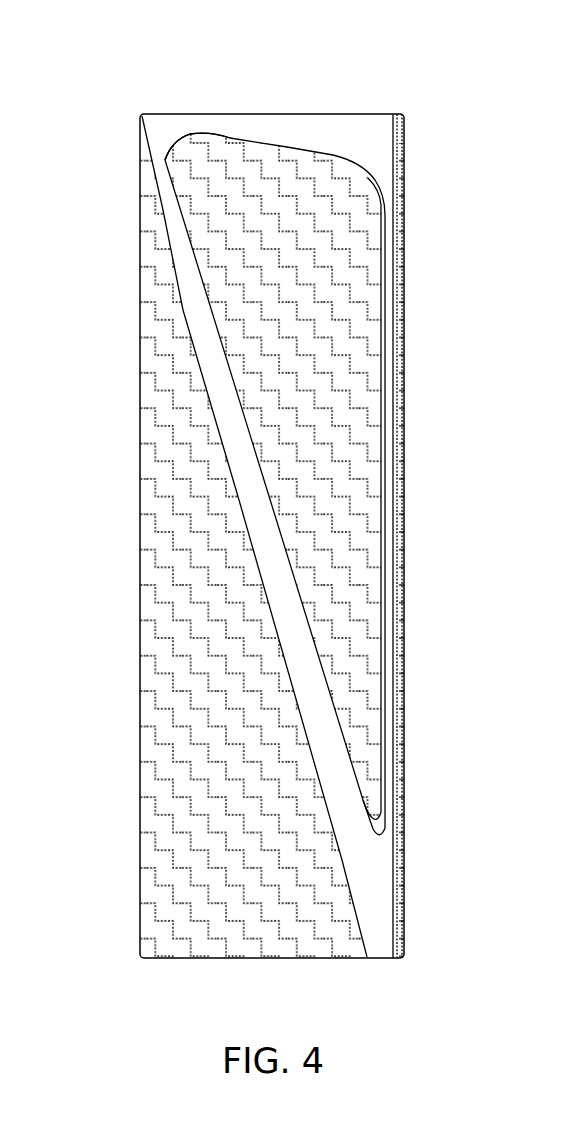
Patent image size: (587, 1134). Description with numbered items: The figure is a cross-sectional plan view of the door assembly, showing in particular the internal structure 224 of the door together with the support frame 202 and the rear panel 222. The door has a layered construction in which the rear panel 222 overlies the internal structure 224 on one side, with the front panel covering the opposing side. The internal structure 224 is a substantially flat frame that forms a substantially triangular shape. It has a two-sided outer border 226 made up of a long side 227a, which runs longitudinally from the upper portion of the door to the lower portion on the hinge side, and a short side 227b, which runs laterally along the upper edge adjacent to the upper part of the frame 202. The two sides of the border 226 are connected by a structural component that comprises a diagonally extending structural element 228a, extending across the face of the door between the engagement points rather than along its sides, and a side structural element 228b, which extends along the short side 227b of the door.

The support frame 202 is at (402, 233).
The rear panel 222 is at (163, 928).
The internal structure 224 is at (372, 135).
The two-sided outer border 226 is at (328, 132).
The long side 227a is at (393, 733).
The short side 227b is at (222, 120).
The diagonally extending structural element 228a is at (242, 462).
The side structural element 228b is at (232, 130).